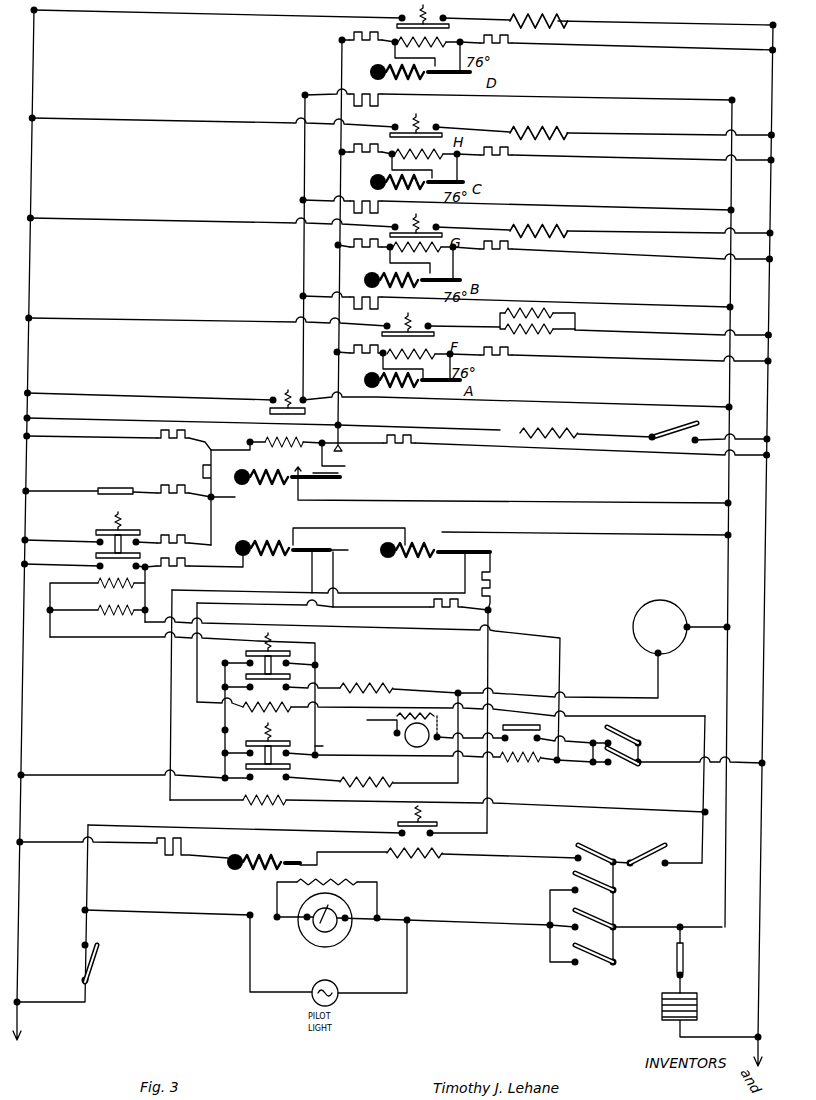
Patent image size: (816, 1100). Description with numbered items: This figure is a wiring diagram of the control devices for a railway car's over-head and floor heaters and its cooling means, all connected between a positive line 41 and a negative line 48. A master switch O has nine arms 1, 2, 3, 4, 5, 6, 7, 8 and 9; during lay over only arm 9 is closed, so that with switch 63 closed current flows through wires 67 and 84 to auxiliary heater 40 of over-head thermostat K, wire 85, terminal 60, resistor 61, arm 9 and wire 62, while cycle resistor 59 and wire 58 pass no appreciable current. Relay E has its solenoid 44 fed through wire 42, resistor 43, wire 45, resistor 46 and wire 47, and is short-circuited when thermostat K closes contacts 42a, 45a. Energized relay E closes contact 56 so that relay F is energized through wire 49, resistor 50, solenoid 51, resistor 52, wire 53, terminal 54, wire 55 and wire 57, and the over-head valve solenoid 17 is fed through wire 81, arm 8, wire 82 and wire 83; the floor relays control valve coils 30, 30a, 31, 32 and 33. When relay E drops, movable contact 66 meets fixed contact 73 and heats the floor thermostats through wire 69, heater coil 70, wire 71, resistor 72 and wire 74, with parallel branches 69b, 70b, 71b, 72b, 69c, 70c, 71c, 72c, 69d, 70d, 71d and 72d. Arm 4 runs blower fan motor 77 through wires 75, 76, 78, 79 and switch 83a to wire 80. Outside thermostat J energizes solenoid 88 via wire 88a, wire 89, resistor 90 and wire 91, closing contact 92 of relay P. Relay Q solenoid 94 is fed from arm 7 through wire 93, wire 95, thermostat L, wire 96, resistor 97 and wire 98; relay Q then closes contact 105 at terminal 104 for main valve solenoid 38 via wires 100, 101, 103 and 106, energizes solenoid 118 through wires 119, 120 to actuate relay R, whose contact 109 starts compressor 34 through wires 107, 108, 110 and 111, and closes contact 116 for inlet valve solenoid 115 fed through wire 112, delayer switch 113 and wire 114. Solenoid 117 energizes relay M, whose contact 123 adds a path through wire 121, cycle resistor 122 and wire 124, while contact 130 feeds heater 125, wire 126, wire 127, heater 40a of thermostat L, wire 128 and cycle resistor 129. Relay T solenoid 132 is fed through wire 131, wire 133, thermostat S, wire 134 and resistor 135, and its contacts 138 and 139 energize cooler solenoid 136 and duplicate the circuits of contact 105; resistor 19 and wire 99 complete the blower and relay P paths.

The master switch arm 1 is at (616, 764).
The master switch arm 2 is at (616, 740).
The master switch arm 3 is at (594, 961).
The master switch arm 4 is at (594, 914).
The master switch arm 5 is at (583, 912).
The master switch arm 6 is at (596, 896).
The master switch arm 7 is at (657, 851).
The master switch arm 8 is at (708, 429).
The switch arm 9 is at (91, 483).
The valve solenoid 17 is at (563, 429).
The blower motor resistor 19 is at (350, 898).
The floor radiator valve solenoid 30 is at (582, 342).
The floor radiator valve solenoid 30a is at (577, 313).
The floor radiator valve solenoid 31 is at (573, 228).
The floor radiator valve solenoid 32 is at (571, 130).
The floor radiator valve solenoid 33 is at (568, 27).
The compressor 34 is at (403, 734).
The solenoid of main valve 38 is at (101, 620).
The auxiliary heater 40 is at (263, 496).
The auxiliary heater 40a is at (246, 544).
The positive line 41 is at (767, 382).
The wire 42 is at (513, 452).
The contact 42a is at (344, 459).
The resistor 43 is at (417, 452).
The solenoid of overhead relay E 44 is at (382, 452).
The wire 45 is at (178, 448).
The contact 45a is at (313, 511).
The resistor 46 is at (160, 486).
The wire 47 is at (103, 438).
The negative line 48 is at (44, 460).
The wire 49 is at (592, 60).
The resistor 50 is at (495, 213).
The solenoid of relay F 51 is at (401, 29).
The resistor 52 is at (361, 209).
The wire 53 is at (320, 372).
The terminal 54 is at (334, 445).
The wire 55 is at (307, 423).
The contact of relay E 56 is at (258, 434).
The wire 57 is at (160, 410).
The wire 58 is at (220, 443).
The cycle resistor 59 is at (203, 478).
The terminal 60 is at (189, 512).
The resistor 61 is at (158, 532).
The wire 62 is at (52, 491).
The switch 63 is at (675, 966).
The movable contact of relay E 66 is at (270, 403).
The wire 67 is at (682, 935).
The wire 69 is at (658, 400).
The wire 69b is at (515, 293).
The wire 69c is at (655, 200).
The wire 69d is at (640, 98).
The heater coil 70 is at (387, 386).
The heater coil 70b is at (418, 298).
The heater coil 70c is at (387, 187).
The heater coil 70d is at (400, 83).
The wire 71 is at (410, 403).
The wire 71b is at (403, 311).
The wire 71c is at (377, 214).
The wire 71d is at (380, 105).
The resistor 72 is at (380, 404).
The resistor 72b is at (367, 312).
The resistor 72c is at (342, 200).
The resistor 72d is at (343, 90).
The relay fixed contact 73 is at (298, 397).
The wire 74 is at (197, 396).
The wire 75 is at (665, 910).
The wire 76 is at (452, 920).
The blower fan motor 77 is at (310, 913).
The wire 78 is at (138, 912).
The wire 79 is at (90, 888).
The wire 80 is at (85, 1005).
The wire 81 is at (759, 444).
The wire 82 is at (622, 435).
The wire 83 is at (458, 430).
The switch 83a is at (100, 963).
The wire 84 is at (681, 503).
The wire 85 is at (228, 500).
The solenoid 88 is at (444, 864).
The wire 88a is at (507, 857).
The wire 89 is at (207, 852).
The resistor 90 is at (167, 852).
The wire 91 is at (53, 845).
The contact of relay P 92 is at (434, 831).
The wire 93 is at (668, 717).
The solenoid of relay Q 94 is at (244, 707).
The wire 95 is at (290, 612).
The wire 96 is at (375, 610).
The resistor 97 is at (427, 610).
The wire 98 is at (487, 663).
The conductor 99 is at (680, 758).
The wire 100 is at (618, 767).
The wire 101 is at (548, 629).
The wire 103 is at (90, 638).
The terminal 104 is at (315, 665).
The contact of relay Q 105 is at (268, 643).
The wire 106 is at (115, 777).
The wire 107 is at (575, 788).
The wire 108 is at (583, 733).
The contact of relay R 109 is at (517, 727).
The wire 110 is at (466, 745).
The wire 111 is at (401, 725).
The wire 112 is at (700, 623).
The delayer switch mechanism 113 is at (633, 612).
The wire 114 is at (657, 668).
The solenoid of cooler inlet valve 115 is at (395, 688).
The contact of relay Q 116 is at (307, 678).
The solenoid 117 is at (99, 581).
The solenoid 118 is at (575, 763).
The wire 119 is at (413, 759).
The wire 120 is at (313, 718).
The wire 121 is at (211, 530).
The cycle resistor 122 is at (153, 529).
The contact of relay M 123 is at (110, 522).
The wire 124 is at (65, 539).
The auxiliary heater 125 is at (422, 538).
The wire 126 is at (582, 533).
The wire 127 is at (357, 530).
The wire 128 is at (223, 566).
The cycle resistor 129 is at (167, 578).
The contact of relay M 130 is at (97, 559).
The wire 131 is at (593, 812).
The solenoid of relay T 132 is at (290, 802).
The wire 133 is at (170, 752).
The wire 134 is at (495, 562).
The resistor 135 is at (495, 592).
The solenoid 136 is at (341, 782).
The contact of relay T 138 is at (225, 767).
The contact of relay T 139 is at (225, 740).